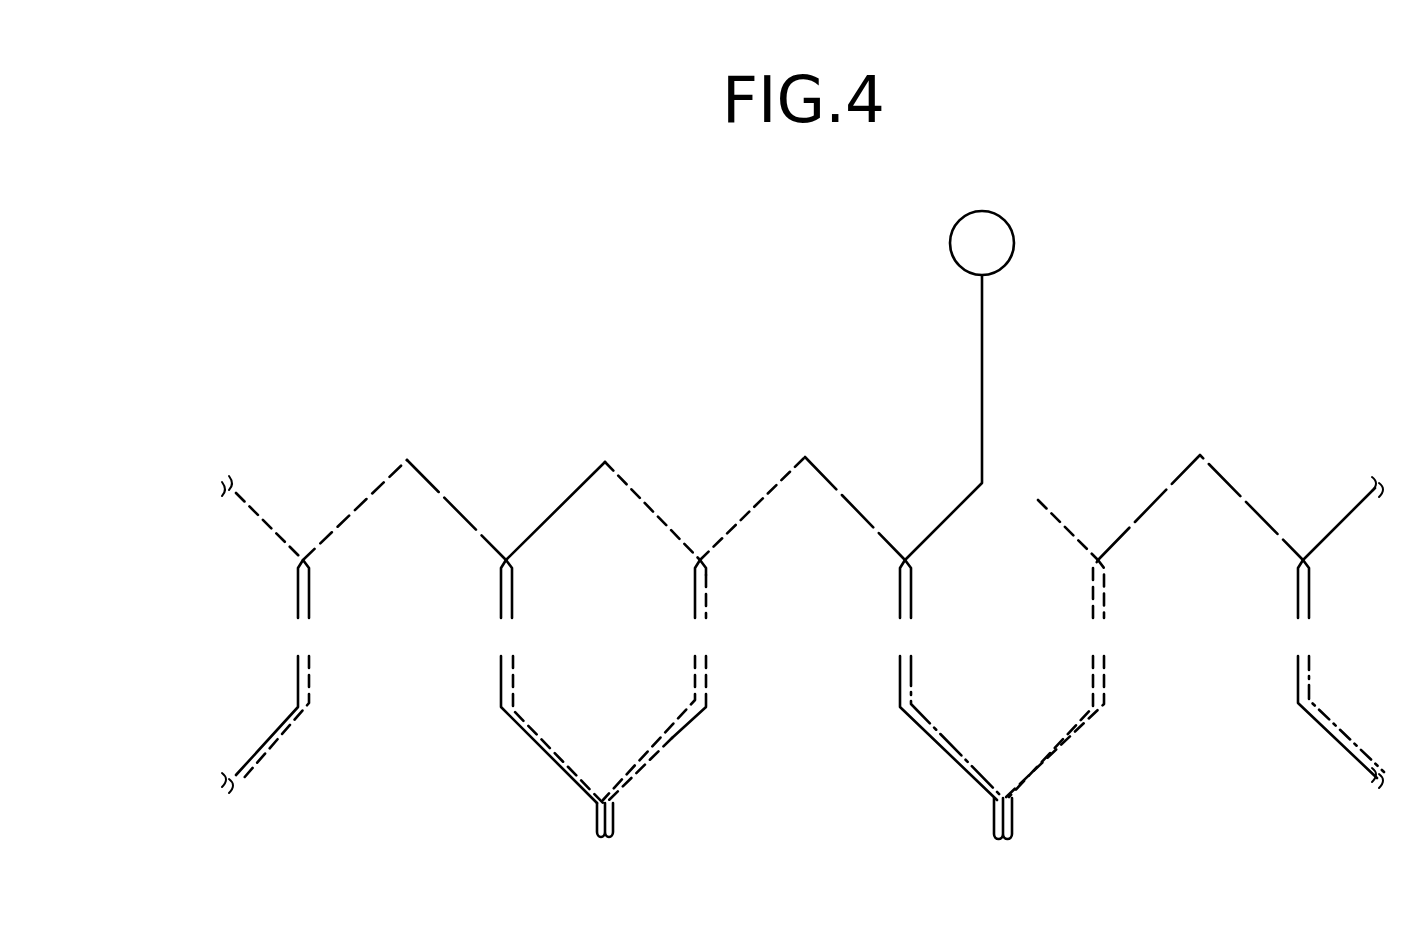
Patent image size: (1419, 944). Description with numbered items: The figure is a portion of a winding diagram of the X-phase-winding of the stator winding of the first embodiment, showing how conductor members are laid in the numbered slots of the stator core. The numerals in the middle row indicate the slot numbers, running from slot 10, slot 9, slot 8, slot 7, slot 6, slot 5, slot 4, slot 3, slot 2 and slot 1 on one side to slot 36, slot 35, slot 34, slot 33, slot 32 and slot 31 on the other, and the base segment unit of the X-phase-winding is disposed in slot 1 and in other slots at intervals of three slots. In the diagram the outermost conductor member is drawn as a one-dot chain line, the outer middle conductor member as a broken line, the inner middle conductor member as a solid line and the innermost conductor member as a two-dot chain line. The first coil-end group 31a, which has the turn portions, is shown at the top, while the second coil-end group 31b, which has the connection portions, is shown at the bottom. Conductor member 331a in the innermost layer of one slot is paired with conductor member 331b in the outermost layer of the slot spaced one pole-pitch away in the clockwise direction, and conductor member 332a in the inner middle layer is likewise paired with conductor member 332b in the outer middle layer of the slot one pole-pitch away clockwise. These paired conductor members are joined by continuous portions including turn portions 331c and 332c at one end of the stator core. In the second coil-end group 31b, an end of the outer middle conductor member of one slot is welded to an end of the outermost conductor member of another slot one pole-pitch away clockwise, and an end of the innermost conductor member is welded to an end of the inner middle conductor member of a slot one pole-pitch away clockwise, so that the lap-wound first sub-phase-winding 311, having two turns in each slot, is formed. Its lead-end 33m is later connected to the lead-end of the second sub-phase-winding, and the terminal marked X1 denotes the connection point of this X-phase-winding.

The slot No. 1 is at (948, 680).
The slot No. 2 is at (836, 639).
The slot No. 3 is at (770, 639).
The slot No. 4 is at (657, 680).
The slot No. 5 is at (638, 639).
The slot No. 6 is at (572, 639).
The slot No. 7 is at (550, 681).
The slot No. 8 is at (443, 639).
The slot No. 9 is at (377, 639).
The slot No. 10 is at (274, 676).
The slot No. 31 is at (1334, 674).
The slot No. 32 is at (1235, 639).
The slot No. 33 is at (1168, 639).
The slot No. 34 is at (1061, 680).
The slot No. 35 is at (1037, 639).
The slot No. 36 is at (972, 639).
The first coil-end group 31a is at (197, 462).
The second coil-end group 31b is at (197, 707).
The first sub-phase-winding 311 is at (1208, 432).
The conductor member in the innermost layer 331a is at (660, 720).
The conductor member in the outermost layer 331b is at (548, 715).
The turn portion 331c is at (410, 458).
The conductor member in the inner middle layer 332a is at (548, 715).
The conductor member in the outer middle layer 332b is at (660, 720).
The turn portion 332c is at (606, 462).
The lead-end 33m is at (1052, 512).
The phase terminal X1 is at (959, 385).